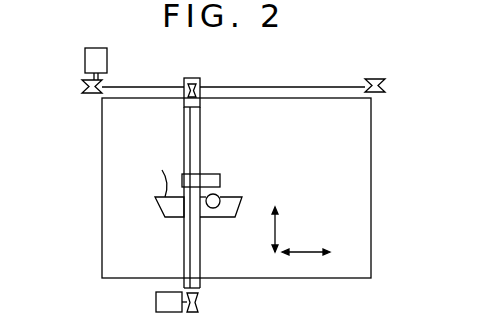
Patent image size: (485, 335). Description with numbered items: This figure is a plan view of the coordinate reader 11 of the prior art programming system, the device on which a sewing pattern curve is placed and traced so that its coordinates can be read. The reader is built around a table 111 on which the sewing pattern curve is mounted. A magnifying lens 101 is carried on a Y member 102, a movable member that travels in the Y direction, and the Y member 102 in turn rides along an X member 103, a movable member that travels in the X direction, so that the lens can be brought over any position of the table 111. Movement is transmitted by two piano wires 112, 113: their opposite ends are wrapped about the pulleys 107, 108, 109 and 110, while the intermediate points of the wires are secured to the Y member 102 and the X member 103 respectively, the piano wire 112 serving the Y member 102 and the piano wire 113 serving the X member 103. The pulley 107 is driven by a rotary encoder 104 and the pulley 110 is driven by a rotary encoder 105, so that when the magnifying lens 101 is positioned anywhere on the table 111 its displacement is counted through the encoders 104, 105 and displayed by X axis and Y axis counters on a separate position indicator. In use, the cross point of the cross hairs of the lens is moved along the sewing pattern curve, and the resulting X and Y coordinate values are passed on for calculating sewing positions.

The coordinate reader 11 is at (420, 263).
The magnifying lens 101 is at (213, 208).
The Y member 102 is at (220, 179).
The X member 103 is at (184, 246).
The rotary encoder 104 is at (156, 302).
The rotary encoder 105 is at (95, 48).
The pulley 107 is at (198, 302).
The pulley 108 is at (192, 78).
The pulley 109 is at (385, 86).
The pulley 110 is at (82, 87).
The table 111 is at (371, 181).
The piano wire 112 is at (200, 126).
The piano wire 113 is at (138, 87).